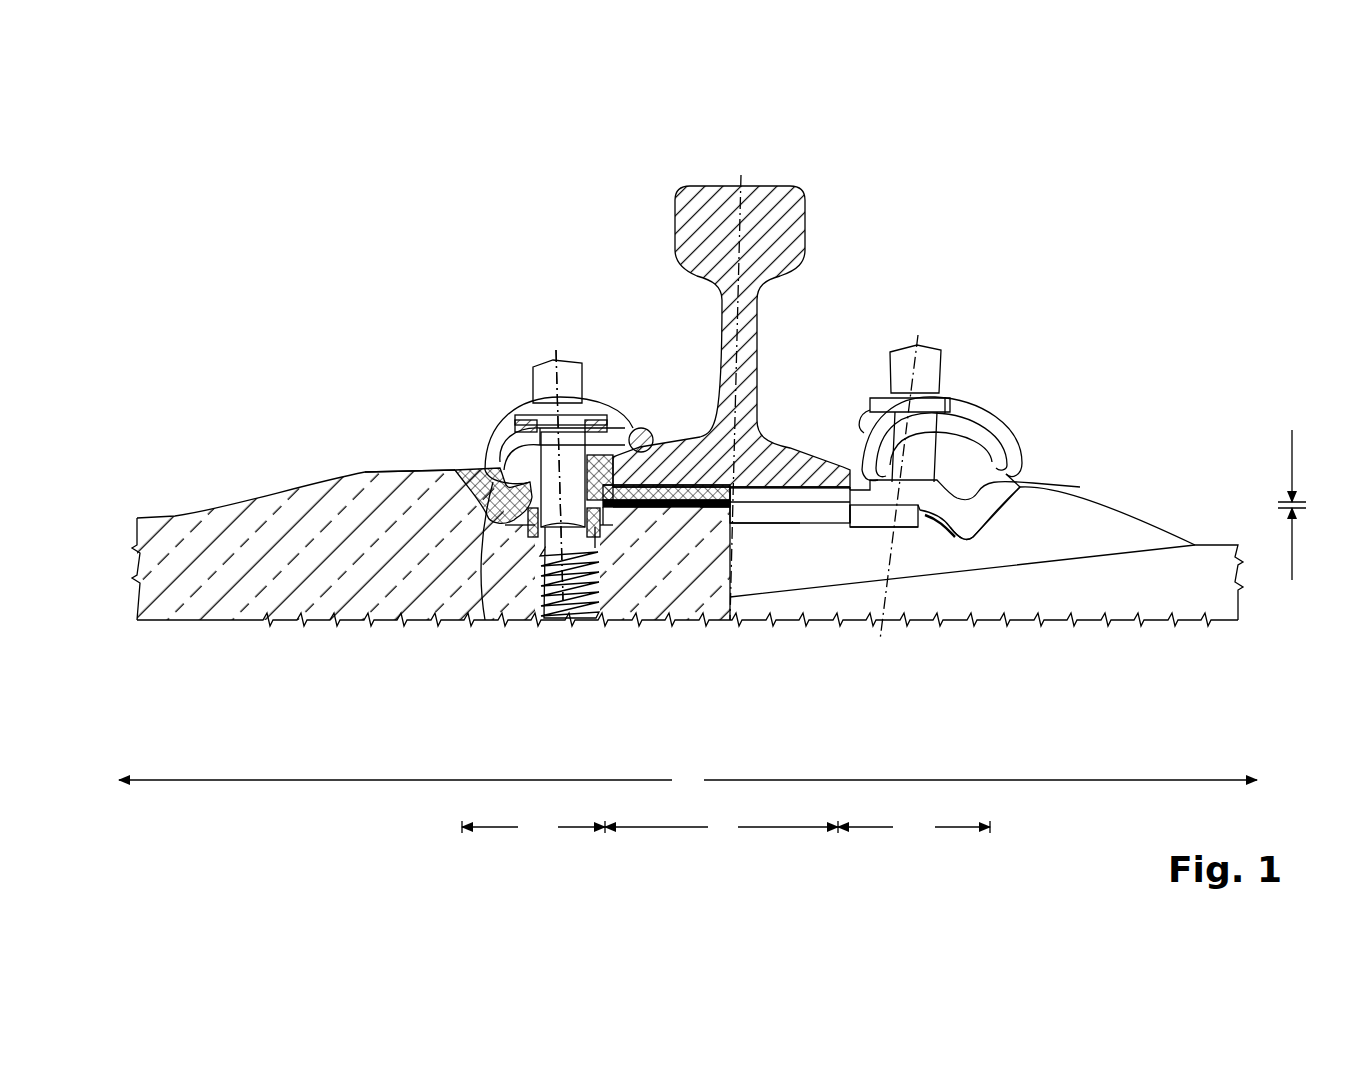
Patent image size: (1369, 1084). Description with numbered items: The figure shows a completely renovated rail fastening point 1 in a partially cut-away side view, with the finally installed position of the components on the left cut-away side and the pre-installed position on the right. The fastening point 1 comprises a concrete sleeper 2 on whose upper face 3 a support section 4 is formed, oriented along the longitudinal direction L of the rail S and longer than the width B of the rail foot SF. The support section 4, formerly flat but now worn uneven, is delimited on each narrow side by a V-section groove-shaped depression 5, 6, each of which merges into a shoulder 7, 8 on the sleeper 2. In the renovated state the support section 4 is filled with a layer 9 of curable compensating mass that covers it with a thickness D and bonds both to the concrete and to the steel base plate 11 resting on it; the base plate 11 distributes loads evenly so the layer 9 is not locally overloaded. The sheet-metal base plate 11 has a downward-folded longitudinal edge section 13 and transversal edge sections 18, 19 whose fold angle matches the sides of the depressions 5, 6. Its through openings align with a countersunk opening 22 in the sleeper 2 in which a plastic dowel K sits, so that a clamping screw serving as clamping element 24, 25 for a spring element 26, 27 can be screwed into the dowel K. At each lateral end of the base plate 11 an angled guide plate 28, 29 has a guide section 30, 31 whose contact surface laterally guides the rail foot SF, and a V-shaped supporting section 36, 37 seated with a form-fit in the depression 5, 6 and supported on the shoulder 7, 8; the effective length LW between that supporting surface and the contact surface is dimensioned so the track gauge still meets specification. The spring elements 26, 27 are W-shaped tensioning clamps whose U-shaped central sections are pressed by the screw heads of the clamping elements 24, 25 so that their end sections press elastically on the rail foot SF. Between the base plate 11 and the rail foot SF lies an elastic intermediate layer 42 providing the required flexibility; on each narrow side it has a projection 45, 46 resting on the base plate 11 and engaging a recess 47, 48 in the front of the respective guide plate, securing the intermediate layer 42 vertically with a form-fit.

The rail fastening point 1 is at (503, 285).
The sleeper 2 is at (1177, 585).
The upper face 3 is at (432, 467).
The support section 4 is at (665, 521).
The groove-shaped depression 5 is at (523, 517).
The groove-shaped depression 6 is at (957, 537).
The shoulder 7 is at (1072, 500).
The shoulder 8 is at (407, 487).
The layer of compensating mass 9 is at (645, 508).
The base plate 11 is at (708, 508).
The longitudinal edge section 13 is at (767, 520).
The transversal edge section 18 is at (513, 520).
The transversal edge section 19 is at (940, 522).
The opening 22 is at (603, 507).
The clamping element 24 is at (567, 380).
The clamping element 25 is at (905, 358).
The spring element 26 is at (465, 467).
The spring element 27 is at (983, 417).
The guide plate 28 is at (503, 432).
The guide plate 29 is at (947, 395).
The guide section 30 is at (620, 428).
The guide section 31 is at (877, 493).
The supporting section 36 is at (490, 482).
The supporting section 37 is at (1027, 490).
The elastic intermediate layer 42 is at (697, 493).
The projection 45 is at (627, 507).
The projection 46 is at (850, 472).
The recess 47 is at (610, 507).
The recess 48 is at (858, 500).
The rail S is at (710, 188).
The rail foot SF is at (778, 457).
The plastic dowel K is at (595, 572).
The thickness D is at (1307, 505).
The longitudinal direction L is at (688, 780).
The effective length of the guide plate LW is at (726, 827).
The width of the rail foot B is at (721, 827).